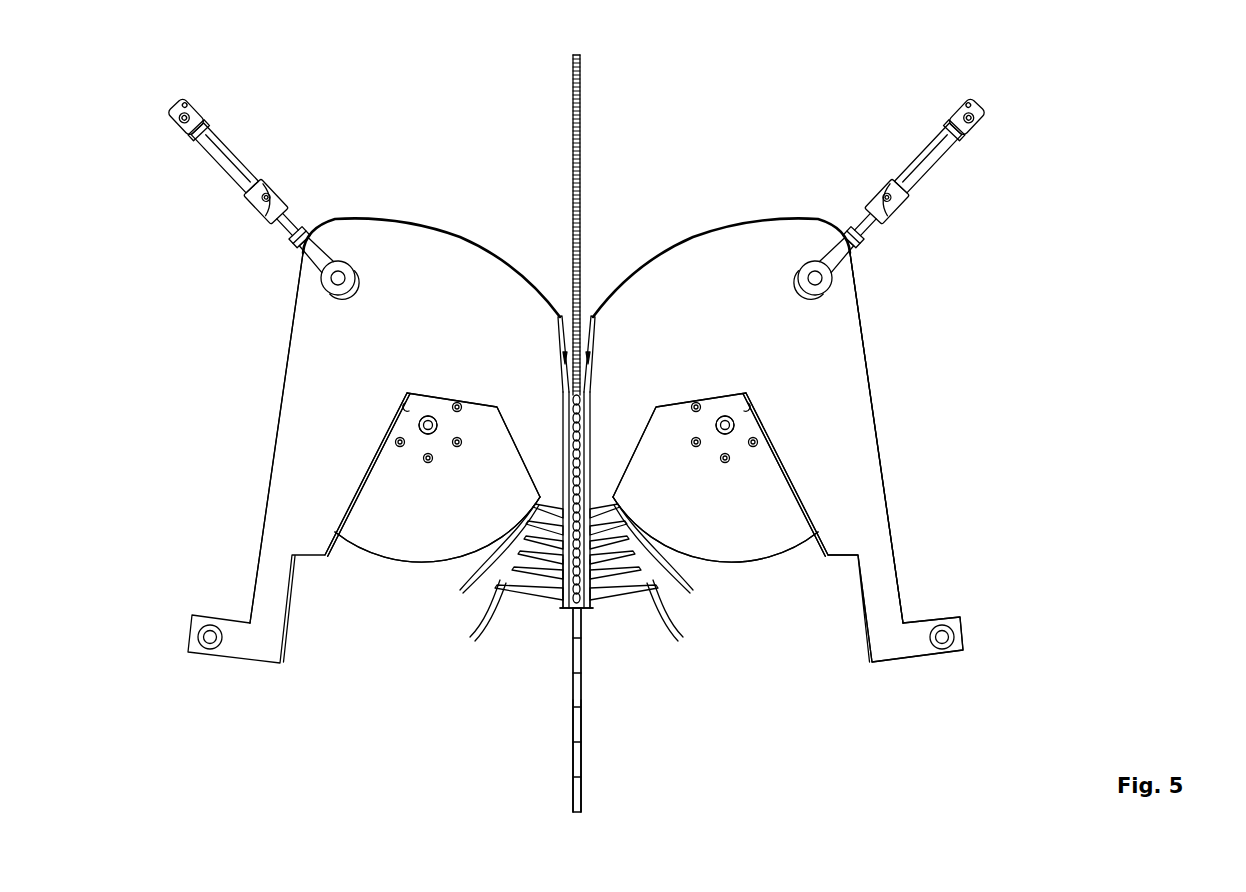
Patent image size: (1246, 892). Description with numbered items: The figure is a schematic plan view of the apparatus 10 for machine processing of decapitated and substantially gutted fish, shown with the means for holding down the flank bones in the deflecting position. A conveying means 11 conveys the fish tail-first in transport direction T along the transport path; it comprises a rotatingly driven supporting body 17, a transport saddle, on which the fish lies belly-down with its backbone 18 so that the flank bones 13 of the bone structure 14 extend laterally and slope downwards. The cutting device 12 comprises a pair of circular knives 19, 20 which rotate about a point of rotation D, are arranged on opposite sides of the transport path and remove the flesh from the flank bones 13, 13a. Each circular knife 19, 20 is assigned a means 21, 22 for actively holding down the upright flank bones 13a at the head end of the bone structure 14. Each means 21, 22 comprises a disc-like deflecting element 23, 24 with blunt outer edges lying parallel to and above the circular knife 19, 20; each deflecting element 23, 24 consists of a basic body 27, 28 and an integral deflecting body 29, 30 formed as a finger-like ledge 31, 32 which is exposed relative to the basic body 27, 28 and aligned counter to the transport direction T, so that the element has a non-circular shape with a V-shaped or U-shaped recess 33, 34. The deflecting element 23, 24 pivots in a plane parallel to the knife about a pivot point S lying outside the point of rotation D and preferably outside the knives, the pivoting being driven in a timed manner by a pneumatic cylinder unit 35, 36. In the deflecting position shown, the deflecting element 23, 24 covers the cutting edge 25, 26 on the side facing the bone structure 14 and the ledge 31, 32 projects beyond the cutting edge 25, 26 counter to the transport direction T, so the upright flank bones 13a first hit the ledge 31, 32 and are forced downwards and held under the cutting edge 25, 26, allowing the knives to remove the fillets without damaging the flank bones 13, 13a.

The apparatus 10 is at (1140, 130).
The conveying means 11 is at (538, 760).
The cutting device 12 is at (930, 318).
The flank bones 13 is at (482, 581).
The flank bones 13a is at (490, 622).
The bone structure 14 is at (525, 655).
The supporting body 17 is at (578, 767).
The backbone 18 is at (567, 612).
The circular knife 19 is at (786, 535).
The circular knife 20 is at (378, 540).
The means for holding down flank bones 21 is at (903, 480).
The means for holding down flank bones 22 is at (238, 463).
The deflecting element 23 is at (847, 340).
The deflecting element 24 is at (287, 340).
The cutting edge 25 is at (740, 540).
The cutting edge 26 is at (420, 562).
The basic body 27 is at (857, 428).
The basic body 28 is at (297, 430).
The deflecting body 29 is at (622, 380).
The deflecting body 30 is at (531, 380).
The finger-like ledge 31 is at (626, 423).
The finger-like ledge 32 is at (527, 423).
The recess 33 is at (783, 490).
The recess 34 is at (370, 490).
The pneumatic cylinder unit 35 is at (897, 108).
The pneumatic cylinder unit 36 is at (256, 108).
The point of rotation D is at (434, 436).
The pivot point S is at (210, 649).
The transport direction T is at (603, 690).